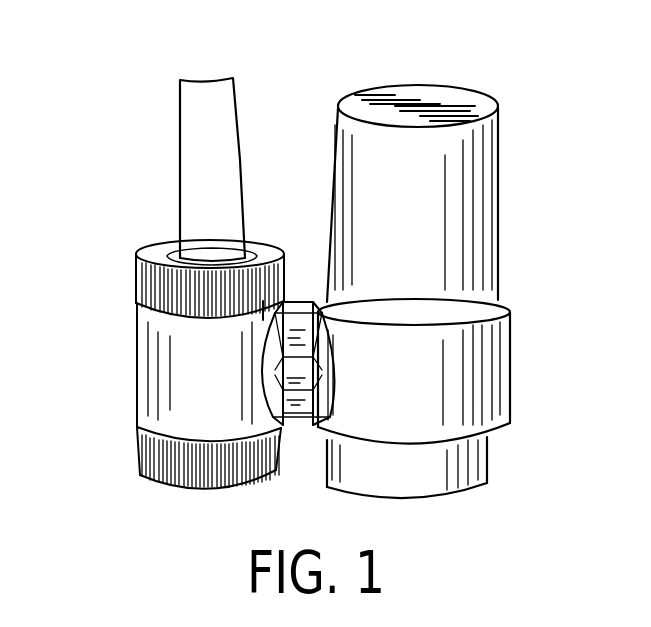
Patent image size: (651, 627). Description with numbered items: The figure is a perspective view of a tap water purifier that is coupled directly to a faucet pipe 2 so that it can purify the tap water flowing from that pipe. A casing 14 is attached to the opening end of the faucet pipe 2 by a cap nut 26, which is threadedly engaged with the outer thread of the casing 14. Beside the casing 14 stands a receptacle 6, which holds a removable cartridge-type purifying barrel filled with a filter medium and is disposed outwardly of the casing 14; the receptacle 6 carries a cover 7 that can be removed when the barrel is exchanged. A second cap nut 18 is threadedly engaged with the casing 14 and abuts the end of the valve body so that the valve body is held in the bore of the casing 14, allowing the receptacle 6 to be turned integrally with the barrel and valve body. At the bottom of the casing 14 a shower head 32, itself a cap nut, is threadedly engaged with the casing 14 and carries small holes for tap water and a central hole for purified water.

The faucet pipe 2 is at (192, 189).
The cap nut 26 is at (147, 283).
The casing 14 is at (152, 372).
The shower head 32 is at (138, 462).
The cap nut 18 is at (300, 428).
The cover 7 is at (493, 222).
The receptacle 6 is at (490, 382).